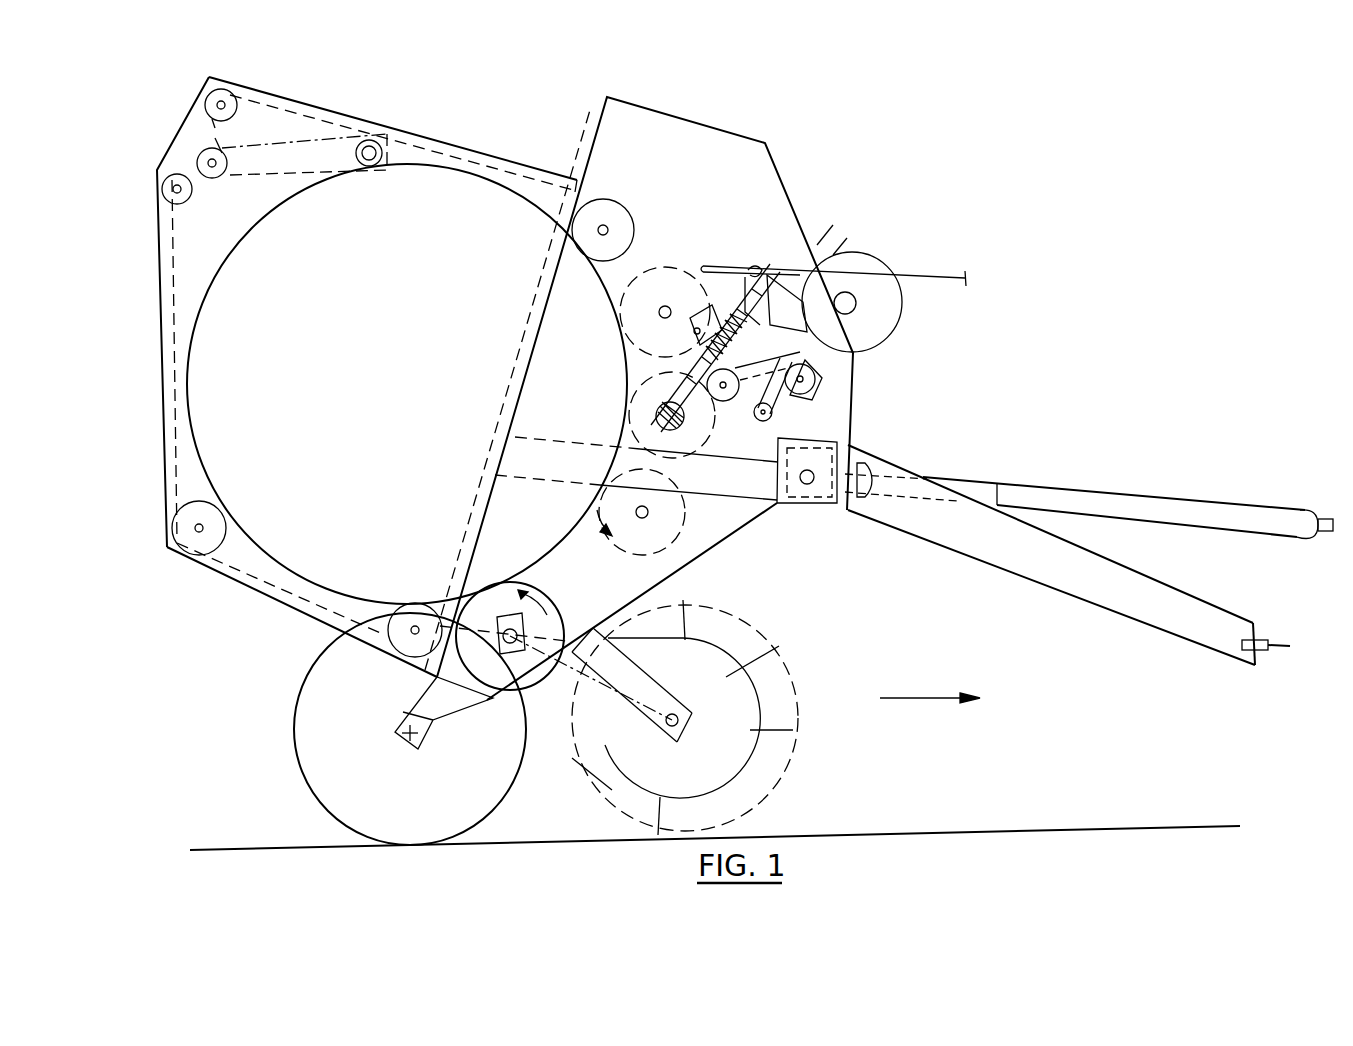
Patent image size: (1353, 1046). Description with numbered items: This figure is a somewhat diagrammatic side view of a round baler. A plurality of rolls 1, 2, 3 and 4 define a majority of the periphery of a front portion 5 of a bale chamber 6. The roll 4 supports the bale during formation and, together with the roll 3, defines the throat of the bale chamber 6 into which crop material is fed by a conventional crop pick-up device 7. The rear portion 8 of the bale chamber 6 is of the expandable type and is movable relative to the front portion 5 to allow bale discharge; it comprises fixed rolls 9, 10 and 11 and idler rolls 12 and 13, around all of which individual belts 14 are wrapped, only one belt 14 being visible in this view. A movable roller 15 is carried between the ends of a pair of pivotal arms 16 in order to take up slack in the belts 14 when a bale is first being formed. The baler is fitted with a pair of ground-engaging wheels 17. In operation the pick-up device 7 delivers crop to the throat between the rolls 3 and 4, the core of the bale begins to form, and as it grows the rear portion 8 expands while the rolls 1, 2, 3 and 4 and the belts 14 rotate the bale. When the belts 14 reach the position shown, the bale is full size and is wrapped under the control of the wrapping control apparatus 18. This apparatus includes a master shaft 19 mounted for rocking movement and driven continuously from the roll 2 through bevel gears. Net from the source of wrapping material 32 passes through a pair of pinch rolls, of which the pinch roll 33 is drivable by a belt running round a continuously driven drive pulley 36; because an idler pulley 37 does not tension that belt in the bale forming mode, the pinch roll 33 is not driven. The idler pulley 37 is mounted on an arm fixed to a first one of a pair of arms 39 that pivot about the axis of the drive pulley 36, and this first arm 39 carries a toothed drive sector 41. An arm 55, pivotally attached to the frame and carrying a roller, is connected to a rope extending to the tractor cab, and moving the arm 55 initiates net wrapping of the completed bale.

The roll 1 is at (653, 270).
The roll 2 is at (628, 419).
The roll 3 is at (630, 547).
The roll 4 is at (557, 610).
The front portion 5 is at (673, 132).
The bale chamber 6 is at (368, 394).
The crop pick-up device 7 is at (730, 677).
The rear portion 8 is at (440, 142).
The fixed roll 9 is at (617, 210).
The fixed roll 10 is at (415, 607).
The fixed roll 11 is at (190, 542).
The idler roll 12 is at (165, 187).
The idler roll 13 is at (232, 92).
The belt 14 is at (168, 253).
The movable roller 15 is at (218, 180).
The pivotal arm 16 is at (303, 163).
The ground-engaging wheel 17 is at (303, 722).
The wrapping control apparatus 18 is at (758, 248).
The master shaft 19 is at (735, 352).
The source of wrapping material 32 is at (903, 260).
The pinch roll 33 is at (727, 400).
The drive pulley 36 is at (818, 377).
The idler pulley 37 is at (775, 414).
The arm 39 is at (817, 398).
The toothed drive sector 41 is at (795, 312).
The arm 55 is at (703, 262).